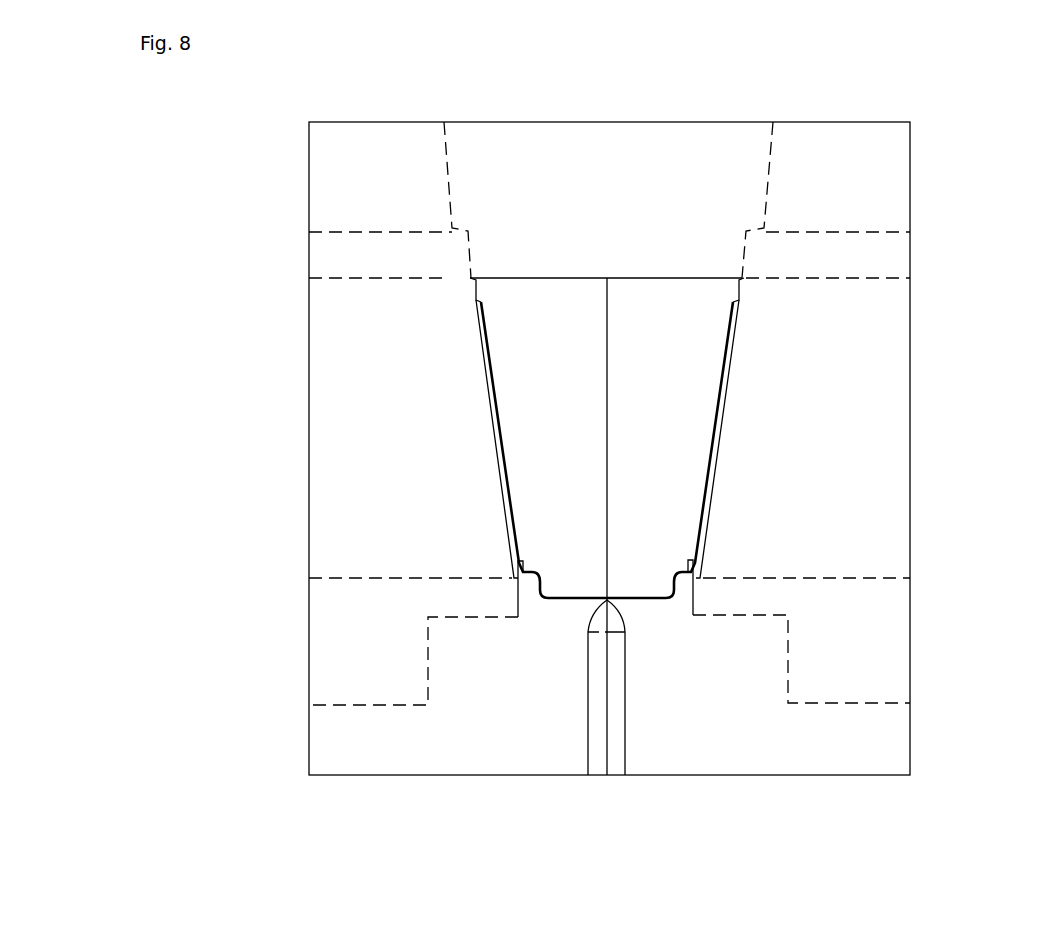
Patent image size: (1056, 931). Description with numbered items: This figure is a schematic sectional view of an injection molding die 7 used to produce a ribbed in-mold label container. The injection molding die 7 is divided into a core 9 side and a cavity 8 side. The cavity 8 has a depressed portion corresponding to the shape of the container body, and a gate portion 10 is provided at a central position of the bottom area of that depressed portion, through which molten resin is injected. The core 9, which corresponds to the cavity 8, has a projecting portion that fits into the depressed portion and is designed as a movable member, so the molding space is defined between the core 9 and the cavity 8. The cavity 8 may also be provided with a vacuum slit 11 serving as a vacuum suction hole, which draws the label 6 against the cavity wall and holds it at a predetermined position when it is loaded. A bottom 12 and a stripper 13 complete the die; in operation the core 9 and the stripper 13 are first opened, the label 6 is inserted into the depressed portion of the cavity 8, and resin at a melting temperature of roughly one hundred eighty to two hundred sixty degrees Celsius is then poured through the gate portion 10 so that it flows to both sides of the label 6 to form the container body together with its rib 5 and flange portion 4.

The flange portion 4 is at (466, 278).
The rib 5 is at (487, 393).
The label 6 is at (502, 465).
The injection molding die 7 is at (950, 106).
The cavity 8 is at (883, 408).
The core 9 is at (650, 160).
The gate portion 10 is at (600, 638).
The vacuum slit 11 is at (810, 578).
The bottom 12 is at (739, 723).
The stripper 13 is at (888, 258).